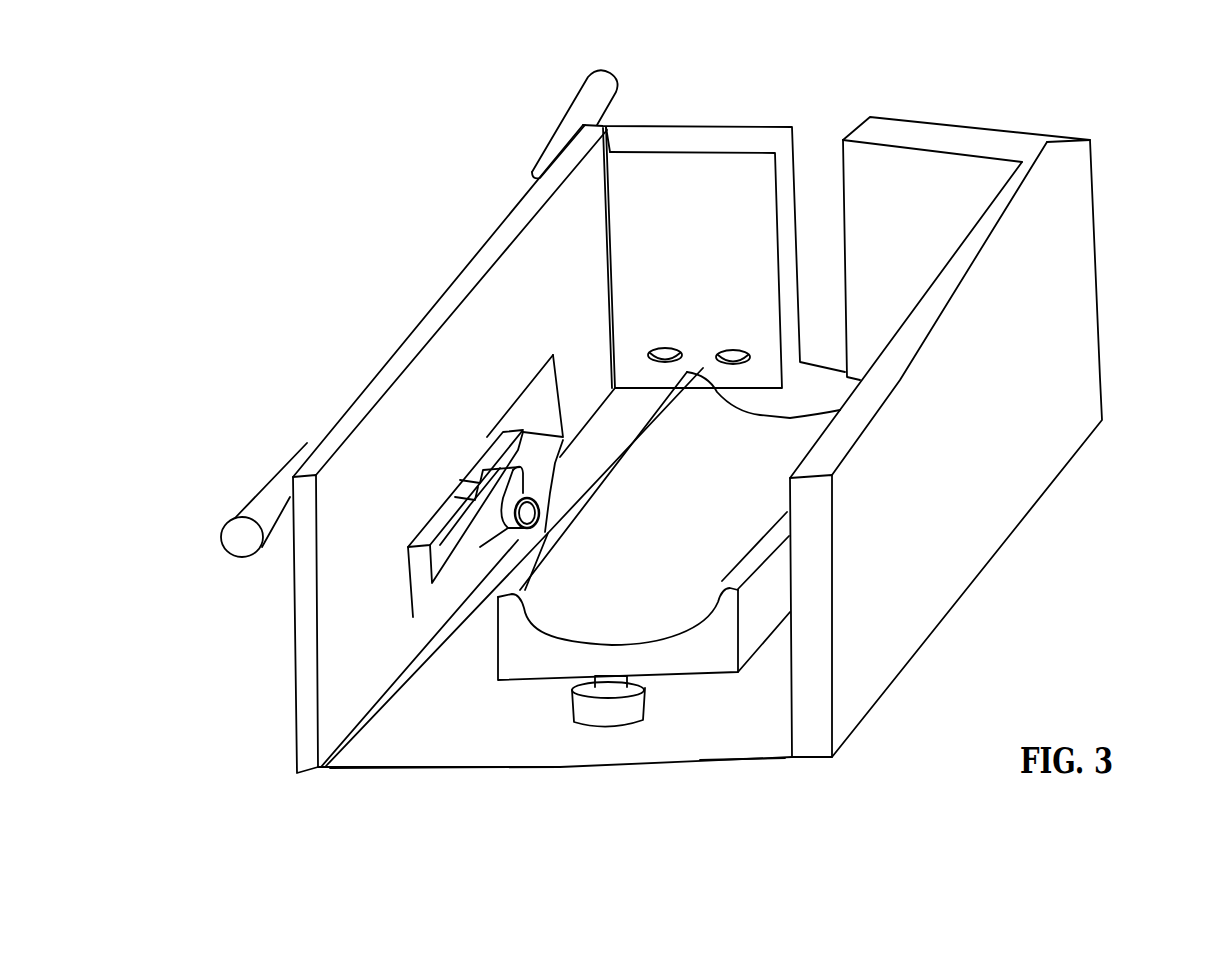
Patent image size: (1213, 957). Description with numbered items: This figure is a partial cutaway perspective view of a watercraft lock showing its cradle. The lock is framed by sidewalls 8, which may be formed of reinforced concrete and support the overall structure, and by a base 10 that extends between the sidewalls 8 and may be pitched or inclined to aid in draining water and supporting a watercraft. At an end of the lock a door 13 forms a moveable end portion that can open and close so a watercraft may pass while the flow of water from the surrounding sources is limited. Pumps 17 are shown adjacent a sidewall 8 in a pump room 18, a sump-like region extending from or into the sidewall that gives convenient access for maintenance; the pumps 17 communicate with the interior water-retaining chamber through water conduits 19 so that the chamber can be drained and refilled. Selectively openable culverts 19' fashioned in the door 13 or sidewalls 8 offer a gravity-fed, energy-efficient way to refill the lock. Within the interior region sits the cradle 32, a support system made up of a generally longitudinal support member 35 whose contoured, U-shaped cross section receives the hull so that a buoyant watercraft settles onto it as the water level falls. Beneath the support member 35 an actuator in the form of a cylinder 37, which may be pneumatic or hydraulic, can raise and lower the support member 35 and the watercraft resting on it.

The sidewalls 8 is at (908, 582).
The base 10 is at (455, 746).
The doors 13 is at (882, 190).
The pumps 17 is at (485, 460).
The pump room 18 is at (545, 407).
The water conduits 19 is at (348, 301).
The culverts 19' is at (709, 194).
The cradle 32 is at (691, 700).
The support member 35 is at (730, 500).
The cylinder 37 is at (600, 710).